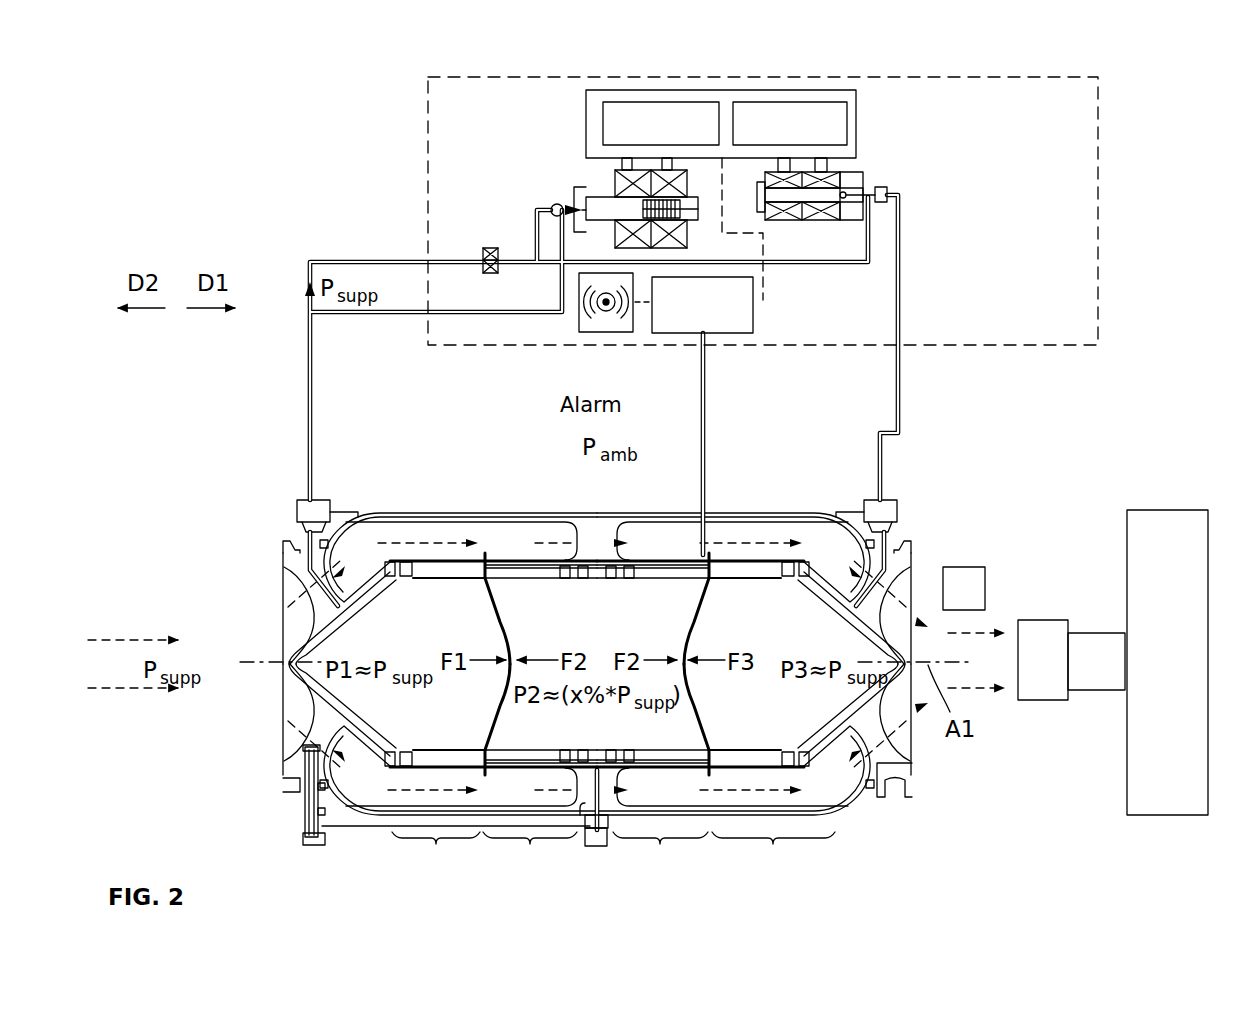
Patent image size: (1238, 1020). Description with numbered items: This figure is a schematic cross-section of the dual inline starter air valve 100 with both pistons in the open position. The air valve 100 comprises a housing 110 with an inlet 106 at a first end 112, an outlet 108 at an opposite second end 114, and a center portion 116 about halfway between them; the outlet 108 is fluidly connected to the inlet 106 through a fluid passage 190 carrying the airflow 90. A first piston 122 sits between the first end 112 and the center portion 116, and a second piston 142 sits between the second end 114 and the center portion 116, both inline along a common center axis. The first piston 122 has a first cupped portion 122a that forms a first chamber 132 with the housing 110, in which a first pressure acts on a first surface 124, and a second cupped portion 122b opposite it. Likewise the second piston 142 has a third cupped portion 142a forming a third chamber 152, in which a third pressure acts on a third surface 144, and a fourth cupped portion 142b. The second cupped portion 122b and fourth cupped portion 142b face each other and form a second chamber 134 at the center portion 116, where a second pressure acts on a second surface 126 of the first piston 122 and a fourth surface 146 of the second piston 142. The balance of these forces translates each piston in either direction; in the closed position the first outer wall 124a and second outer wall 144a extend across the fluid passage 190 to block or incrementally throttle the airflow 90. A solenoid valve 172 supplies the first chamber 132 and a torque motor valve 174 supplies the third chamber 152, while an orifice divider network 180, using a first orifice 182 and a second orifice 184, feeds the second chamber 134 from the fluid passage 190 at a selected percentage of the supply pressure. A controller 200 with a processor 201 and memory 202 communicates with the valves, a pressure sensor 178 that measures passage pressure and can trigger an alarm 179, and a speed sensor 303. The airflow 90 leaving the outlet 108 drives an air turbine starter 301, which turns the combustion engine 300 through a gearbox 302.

The airflow 90 is at (108, 640).
The dual inline starter air valve 100 is at (152, 428).
The inlet 106 is at (220, 600).
The outlet 108 is at (995, 615).
The housing 110 is at (472, 518).
The first end 112 is at (283, 550).
The second end 114 is at (913, 550).
The center portion 116 is at (586, 518).
The first piston 122 is at (488, 578).
The first cupped portion 122a is at (424, 867).
The second cupped portion 122b is at (526, 867).
The first surface 124 is at (484, 594).
The first outer wall 124a is at (393, 558).
The second surface 126 is at (499, 715).
The first chamber 132 is at (400, 599).
The second chamber 134 is at (552, 639).
The second piston 142 is at (705, 578).
The third cupped portion 142a is at (759, 867).
The fourth cupped portion 142b is at (662, 867).
The third surface 144 is at (708, 594).
The second outer wall 144a is at (803, 558).
The fourth surface 146 is at (697, 715).
The third chamber 152 is at (792, 600).
The solenoid valve 172 is at (557, 171).
The torque motor valve 174 is at (882, 155).
The pressure sensor 178 is at (668, 335).
The alarm 179 is at (598, 335).
The orifice divider network 180 is at (304, 815).
The first orifice 182 is at (305, 752).
The second orifice 184 is at (312, 847).
The fluid passage 190 is at (505, 542).
The controller 200 is at (584, 142).
The processor 201 is at (848, 122).
The memory 202 is at (601, 122).
The combustion engine 300 is at (1172, 510).
The air turbine starter 301 is at (1045, 700).
The gearbox 302 is at (1096, 692).
The speed sensor 303 is at (988, 583).